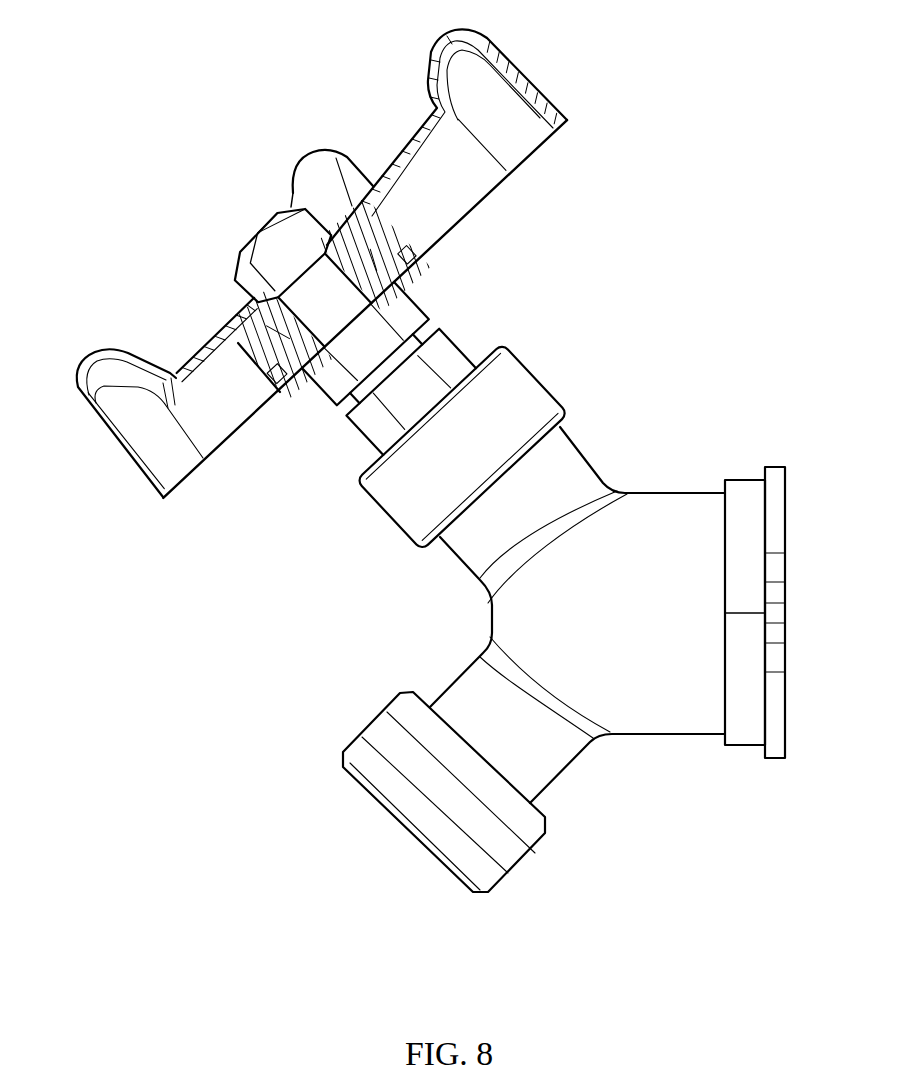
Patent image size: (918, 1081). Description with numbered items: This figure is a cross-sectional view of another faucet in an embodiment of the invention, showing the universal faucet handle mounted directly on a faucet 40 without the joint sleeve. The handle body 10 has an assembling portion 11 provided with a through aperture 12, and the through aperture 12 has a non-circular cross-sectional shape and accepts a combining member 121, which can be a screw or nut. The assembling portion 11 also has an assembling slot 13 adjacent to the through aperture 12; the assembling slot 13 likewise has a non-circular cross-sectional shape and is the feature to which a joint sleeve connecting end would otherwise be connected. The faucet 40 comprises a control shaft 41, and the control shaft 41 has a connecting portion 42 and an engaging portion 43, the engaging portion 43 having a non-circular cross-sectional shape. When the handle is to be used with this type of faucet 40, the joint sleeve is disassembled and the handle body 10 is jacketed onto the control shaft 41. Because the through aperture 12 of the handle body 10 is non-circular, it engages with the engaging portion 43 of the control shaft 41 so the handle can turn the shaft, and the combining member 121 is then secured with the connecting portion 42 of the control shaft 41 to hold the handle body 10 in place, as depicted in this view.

The handle body 10 is at (457, 67).
The assembling portion 11 is at (277, 325).
The assembling slot 13 is at (387, 263).
The through aperture 12 is at (311, 402).
The engaging portion 43 is at (325, 315).
The combining member 121 is at (287, 257).
The connecting portion 42 is at (177, 254).
The control shaft 41 is at (367, 340).
The faucet 40 is at (655, 532).